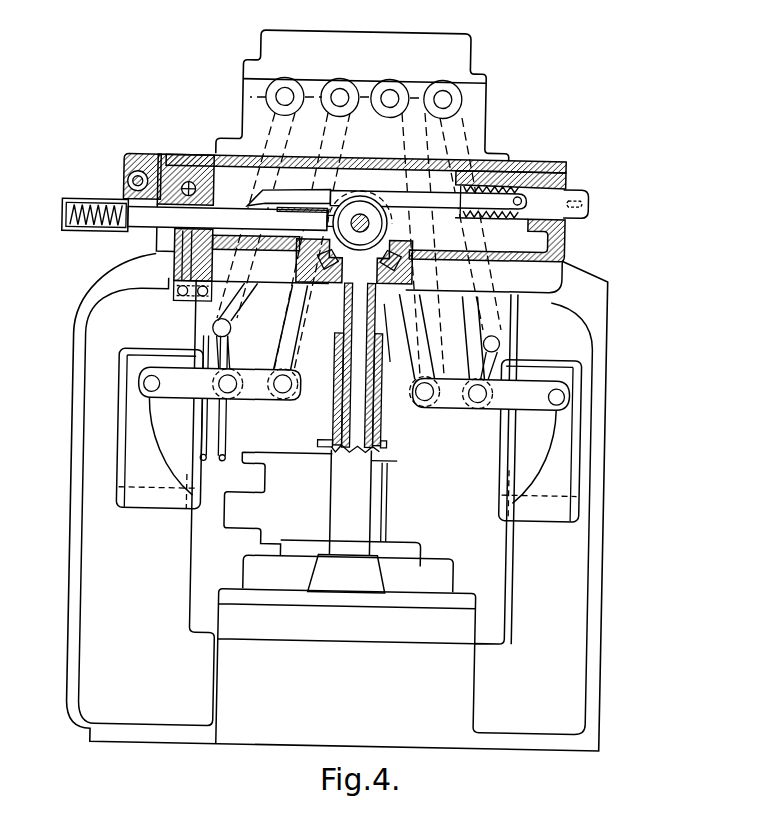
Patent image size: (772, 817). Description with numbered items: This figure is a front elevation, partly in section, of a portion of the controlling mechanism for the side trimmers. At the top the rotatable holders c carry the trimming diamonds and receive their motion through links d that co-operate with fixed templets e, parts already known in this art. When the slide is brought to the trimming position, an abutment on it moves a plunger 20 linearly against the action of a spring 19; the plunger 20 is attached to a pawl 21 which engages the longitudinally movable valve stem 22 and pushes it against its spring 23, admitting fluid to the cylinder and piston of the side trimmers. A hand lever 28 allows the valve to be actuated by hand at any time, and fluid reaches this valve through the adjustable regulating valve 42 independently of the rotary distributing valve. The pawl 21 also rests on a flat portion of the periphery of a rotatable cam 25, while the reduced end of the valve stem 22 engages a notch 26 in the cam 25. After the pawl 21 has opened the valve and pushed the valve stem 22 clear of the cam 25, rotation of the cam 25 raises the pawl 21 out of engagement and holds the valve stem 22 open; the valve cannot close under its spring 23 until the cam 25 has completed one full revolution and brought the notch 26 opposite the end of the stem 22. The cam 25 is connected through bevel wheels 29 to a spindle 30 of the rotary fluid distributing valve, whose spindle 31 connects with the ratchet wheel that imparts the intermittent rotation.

The spring 19 is at (487, 183).
The plunger 20 is at (560, 186).
The pawl 21 is at (293, 191).
The valve stem 22 is at (236, 200).
The spring 23 is at (145, 236).
The rotatable cam 25 is at (370, 222).
The notch 26 is at (342, 213).
The hand lever 28 is at (127, 187).
The bevel wheels 29 is at (399, 346).
The spindle 30 is at (352, 413).
The spindle 31 is at (368, 229).
The adjustable regulating valve 42 is at (188, 185).
The rotatable holder c is at (341, 80).
The links d is at (238, 331).
The fixed templets e is at (140, 425).